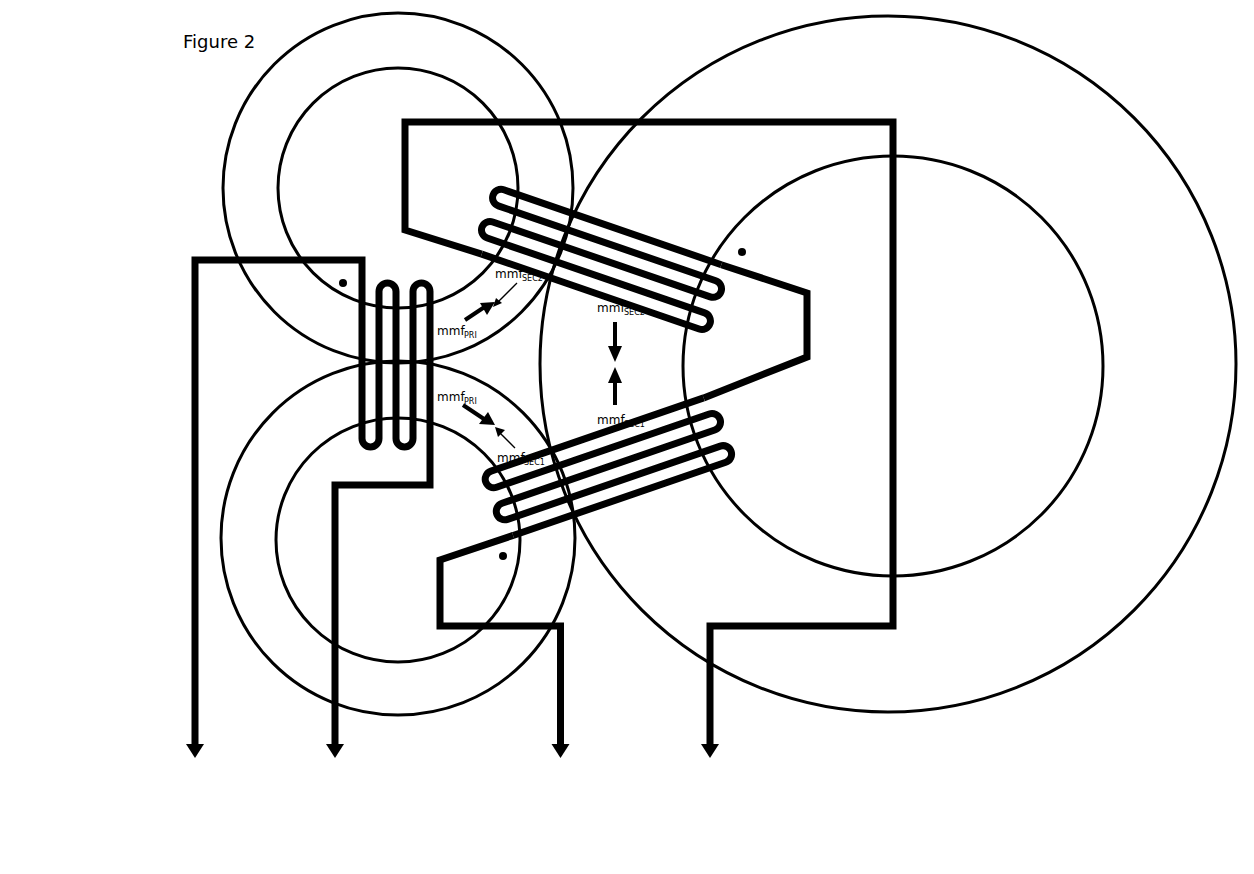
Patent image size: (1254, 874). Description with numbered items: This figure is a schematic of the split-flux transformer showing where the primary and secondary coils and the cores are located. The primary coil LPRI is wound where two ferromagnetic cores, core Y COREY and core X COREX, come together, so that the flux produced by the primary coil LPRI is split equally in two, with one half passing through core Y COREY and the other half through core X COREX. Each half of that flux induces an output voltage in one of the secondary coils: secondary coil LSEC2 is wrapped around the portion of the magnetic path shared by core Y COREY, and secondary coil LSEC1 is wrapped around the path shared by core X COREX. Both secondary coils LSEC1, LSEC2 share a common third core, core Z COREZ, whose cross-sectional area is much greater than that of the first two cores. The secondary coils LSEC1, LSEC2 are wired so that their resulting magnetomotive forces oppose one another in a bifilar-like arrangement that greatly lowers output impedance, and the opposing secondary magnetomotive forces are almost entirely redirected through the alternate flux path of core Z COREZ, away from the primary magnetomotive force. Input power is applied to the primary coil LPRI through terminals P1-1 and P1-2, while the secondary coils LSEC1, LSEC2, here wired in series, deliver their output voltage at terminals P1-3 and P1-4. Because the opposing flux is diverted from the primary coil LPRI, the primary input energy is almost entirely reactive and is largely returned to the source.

The core Y COREY is at (398, 188).
The core X COREX is at (398, 538).
The core Z COREZ is at (888, 364).
The primary coil LPRI is at (312, 499).
The secondary coil #1 LSEC1 is at (582, 571).
The secondary coil #2 LSEC2 is at (649, 435).
The primary coil terminal P1-1 is at (219, 740).
The primary coil terminal P1-2 is at (359, 740).
The secondary coil terminal P1-3 is at (586, 740).
The secondary coil terminal P1-4 is at (734, 740).